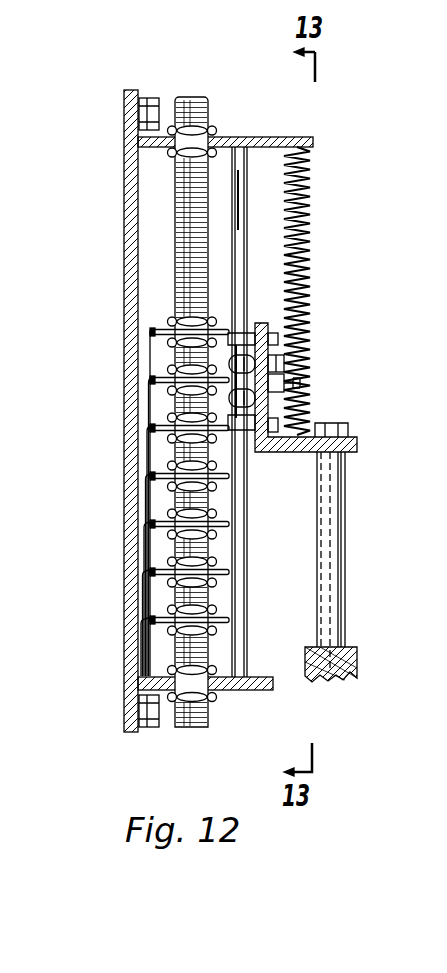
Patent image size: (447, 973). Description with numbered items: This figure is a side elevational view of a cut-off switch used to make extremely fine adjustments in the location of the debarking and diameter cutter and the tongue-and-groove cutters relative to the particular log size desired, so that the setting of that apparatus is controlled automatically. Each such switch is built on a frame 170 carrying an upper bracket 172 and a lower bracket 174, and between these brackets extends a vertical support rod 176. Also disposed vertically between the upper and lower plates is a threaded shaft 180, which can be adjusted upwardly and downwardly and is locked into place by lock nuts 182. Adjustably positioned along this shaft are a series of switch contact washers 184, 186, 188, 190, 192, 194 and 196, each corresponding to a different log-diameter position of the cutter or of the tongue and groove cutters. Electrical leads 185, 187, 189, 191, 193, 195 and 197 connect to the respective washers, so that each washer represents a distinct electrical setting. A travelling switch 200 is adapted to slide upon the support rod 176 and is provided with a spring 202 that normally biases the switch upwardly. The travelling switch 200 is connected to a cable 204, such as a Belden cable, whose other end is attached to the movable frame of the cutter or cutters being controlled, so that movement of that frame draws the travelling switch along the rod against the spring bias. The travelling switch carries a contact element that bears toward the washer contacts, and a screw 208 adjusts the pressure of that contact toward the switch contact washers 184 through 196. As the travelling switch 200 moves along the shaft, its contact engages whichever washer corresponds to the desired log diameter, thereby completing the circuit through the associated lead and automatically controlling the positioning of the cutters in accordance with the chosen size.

The frame 170 is at (130, 230).
The upper bracket 172 is at (275, 137).
The lower bracket 174 is at (220, 701).
The vertical support rod 176 is at (240, 205).
The threaded shaft 180 is at (192, 100).
The lock nuts 182 is at (236, 142).
The switch contact washer 184 is at (232, 621).
The electrical lead 185 is at (141, 645).
The switch contact washer 186 is at (232, 573).
The electrical lead 187 is at (142, 597).
The switch contact washer 188 is at (232, 525).
The electrical lead 189 is at (143, 548).
The switch contact washer 190 is at (232, 477).
The electrical lead 191 is at (145, 497).
The switch contact washer 192 is at (150, 428).
The electrical lead 193 is at (146, 458).
The switch contact washer 194 is at (150, 380).
The electrical lead 195 is at (147, 406).
The switch contact washer 196 is at (150, 330).
The electrical lead 197 is at (148, 345).
The travelling switch 200 is at (270, 352).
The spring 202 is at (312, 255).
The cable 204 is at (345, 487).
The screw 208 is at (288, 389).